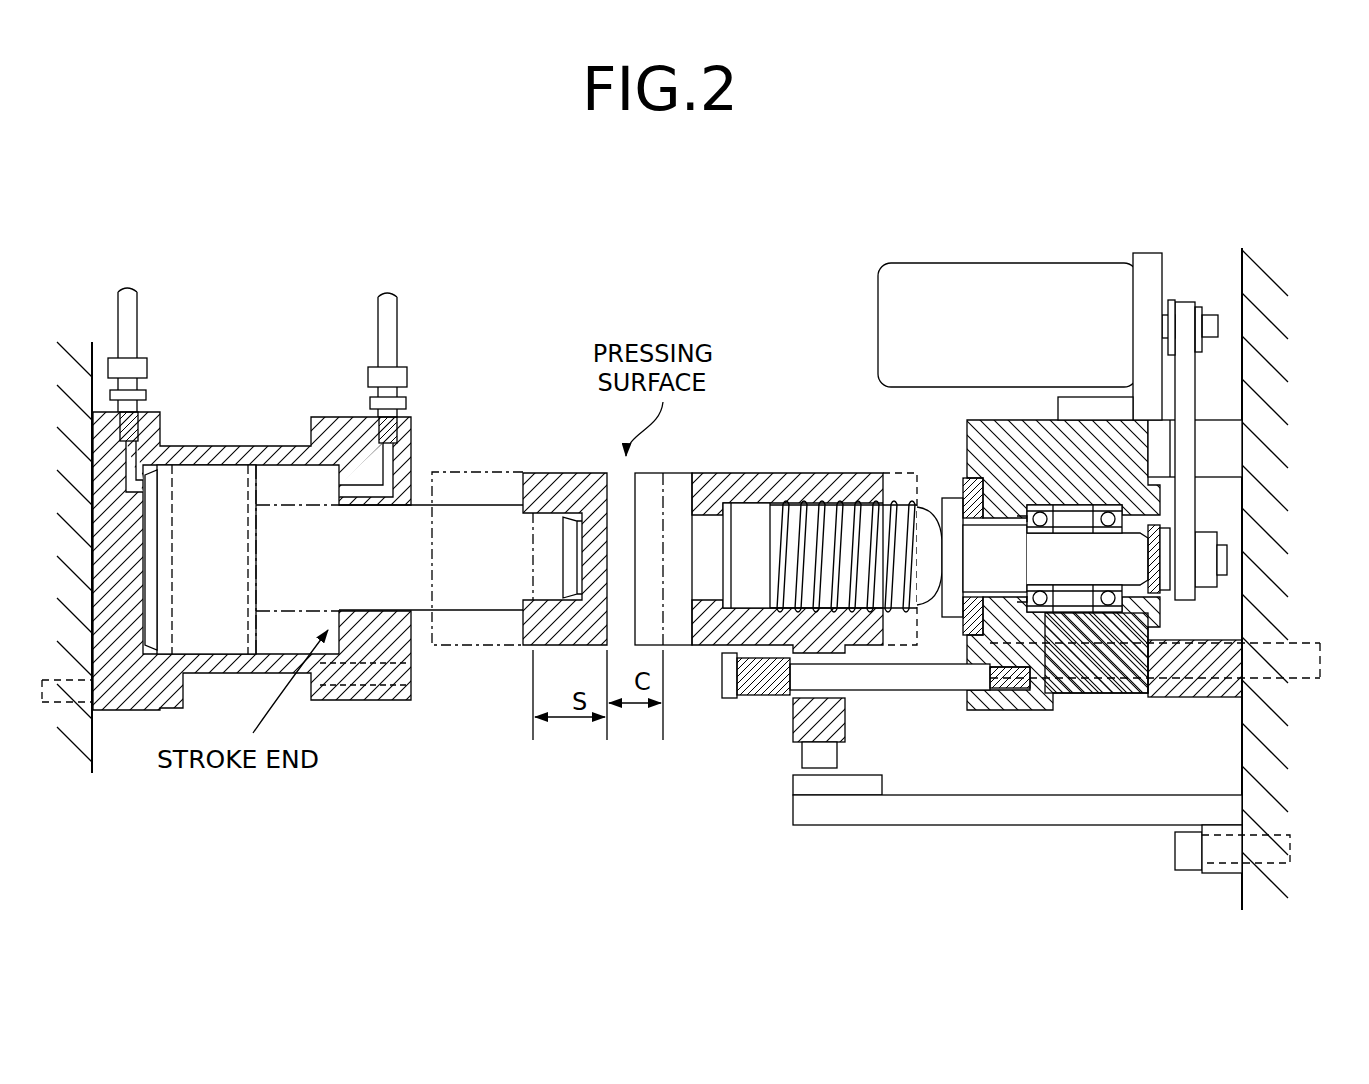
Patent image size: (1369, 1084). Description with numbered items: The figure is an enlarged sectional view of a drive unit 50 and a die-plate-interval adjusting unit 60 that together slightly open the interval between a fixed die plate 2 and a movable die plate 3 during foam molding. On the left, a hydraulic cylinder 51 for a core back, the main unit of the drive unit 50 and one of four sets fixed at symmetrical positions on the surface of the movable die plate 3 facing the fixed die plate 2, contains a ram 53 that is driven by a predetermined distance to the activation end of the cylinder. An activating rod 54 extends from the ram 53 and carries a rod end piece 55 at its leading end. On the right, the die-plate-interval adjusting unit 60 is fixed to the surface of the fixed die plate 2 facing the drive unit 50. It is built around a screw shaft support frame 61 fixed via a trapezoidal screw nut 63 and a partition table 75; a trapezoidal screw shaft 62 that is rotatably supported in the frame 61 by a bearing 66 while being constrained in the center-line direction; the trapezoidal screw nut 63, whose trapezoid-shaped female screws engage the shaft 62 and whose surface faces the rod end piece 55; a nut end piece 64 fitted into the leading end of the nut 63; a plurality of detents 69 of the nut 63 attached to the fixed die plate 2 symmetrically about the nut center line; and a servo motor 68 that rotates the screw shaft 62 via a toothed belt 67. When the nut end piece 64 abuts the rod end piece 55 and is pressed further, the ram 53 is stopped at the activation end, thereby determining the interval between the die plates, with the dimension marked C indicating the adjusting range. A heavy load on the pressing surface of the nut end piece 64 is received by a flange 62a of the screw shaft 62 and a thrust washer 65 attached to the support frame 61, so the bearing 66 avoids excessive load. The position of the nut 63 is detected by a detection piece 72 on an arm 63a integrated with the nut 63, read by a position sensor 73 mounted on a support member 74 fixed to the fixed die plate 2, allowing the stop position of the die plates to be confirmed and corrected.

The fixed die plate 2 is at (1242, 252).
The movable die plate 3 is at (92, 752).
The drive unit 50 is at (308, 459).
The hydraulic cylinder for a core back 51 is at (181, 446).
The ram 53 is at (237, 478).
The activating rod 54 is at (467, 475).
The rod end piece 55 is at (573, 473).
The die-plate-interval adjusting unit 60 is at (995, 497).
The screw shaft support frame 61 is at (1123, 693).
The trapezoidal screw shaft 62 is at (762, 573).
The flange 62a is at (952, 618).
The trapezoidal screw nut 63 is at (818, 473).
The arm 63a is at (790, 703).
The nut end piece 64 is at (680, 473).
The thrust washer 65 is at (947, 480).
The bearing 66 is at (1047, 693).
The toothed belt 67 is at (1185, 452).
The servo motor 68 is at (985, 263).
The detent 69 is at (878, 692).
The detection piece 72 is at (800, 755).
The position sensor 73 is at (868, 786).
The support member 74 is at (1000, 826).
The partition table 75 is at (1195, 697).